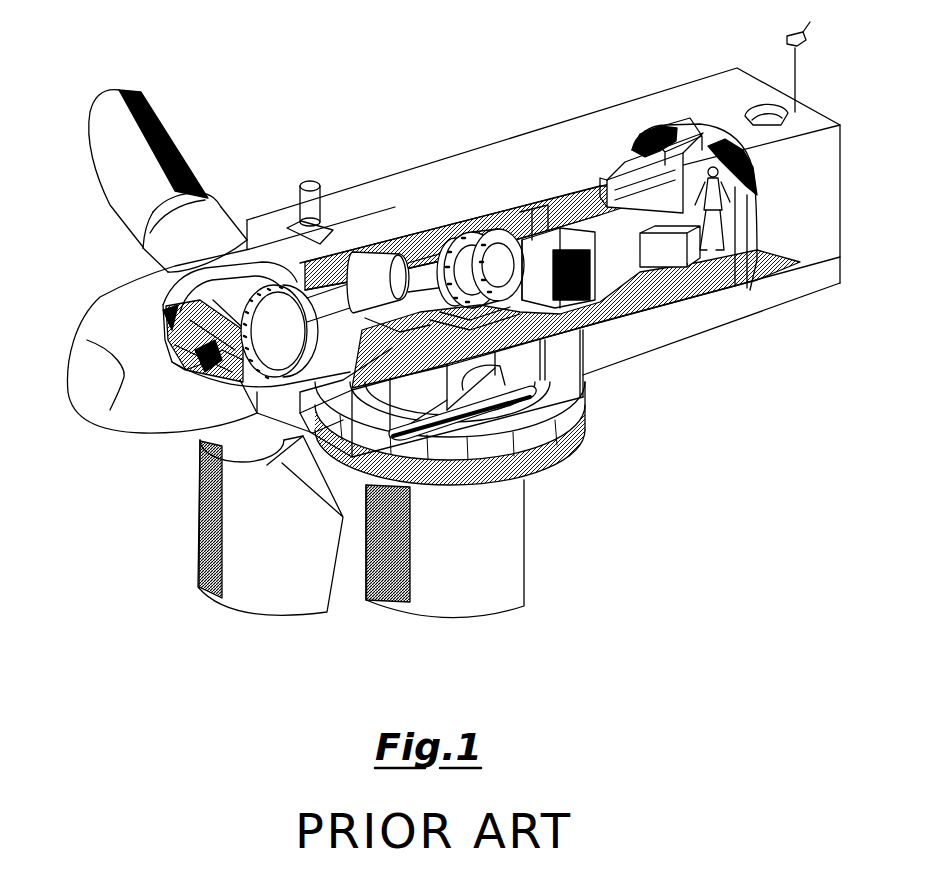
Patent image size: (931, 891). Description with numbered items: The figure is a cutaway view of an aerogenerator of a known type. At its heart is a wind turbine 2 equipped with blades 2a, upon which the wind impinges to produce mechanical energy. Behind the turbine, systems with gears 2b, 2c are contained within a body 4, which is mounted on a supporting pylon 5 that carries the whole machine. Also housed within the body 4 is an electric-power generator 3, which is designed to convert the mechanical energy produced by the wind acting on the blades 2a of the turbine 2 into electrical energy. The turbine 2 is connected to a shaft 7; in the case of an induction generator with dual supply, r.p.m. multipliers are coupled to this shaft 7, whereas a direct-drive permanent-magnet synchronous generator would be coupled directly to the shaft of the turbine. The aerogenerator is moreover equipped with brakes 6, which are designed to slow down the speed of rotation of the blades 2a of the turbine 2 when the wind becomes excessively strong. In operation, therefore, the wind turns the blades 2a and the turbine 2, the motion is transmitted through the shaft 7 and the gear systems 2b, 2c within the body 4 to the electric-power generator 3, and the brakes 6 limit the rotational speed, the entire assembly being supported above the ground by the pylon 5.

The wind turbine 2 is at (115, 455).
The blades 2a is at (130, 160).
The system with gears 2b is at (296, 280).
The system with gears 2c is at (492, 230).
The electric-power generator 3 is at (640, 273).
The body 4 is at (731, 82).
The supporting pylon 5 is at (500, 547).
The brakes 6 is at (400, 253).
The shaft 7 is at (575, 377).